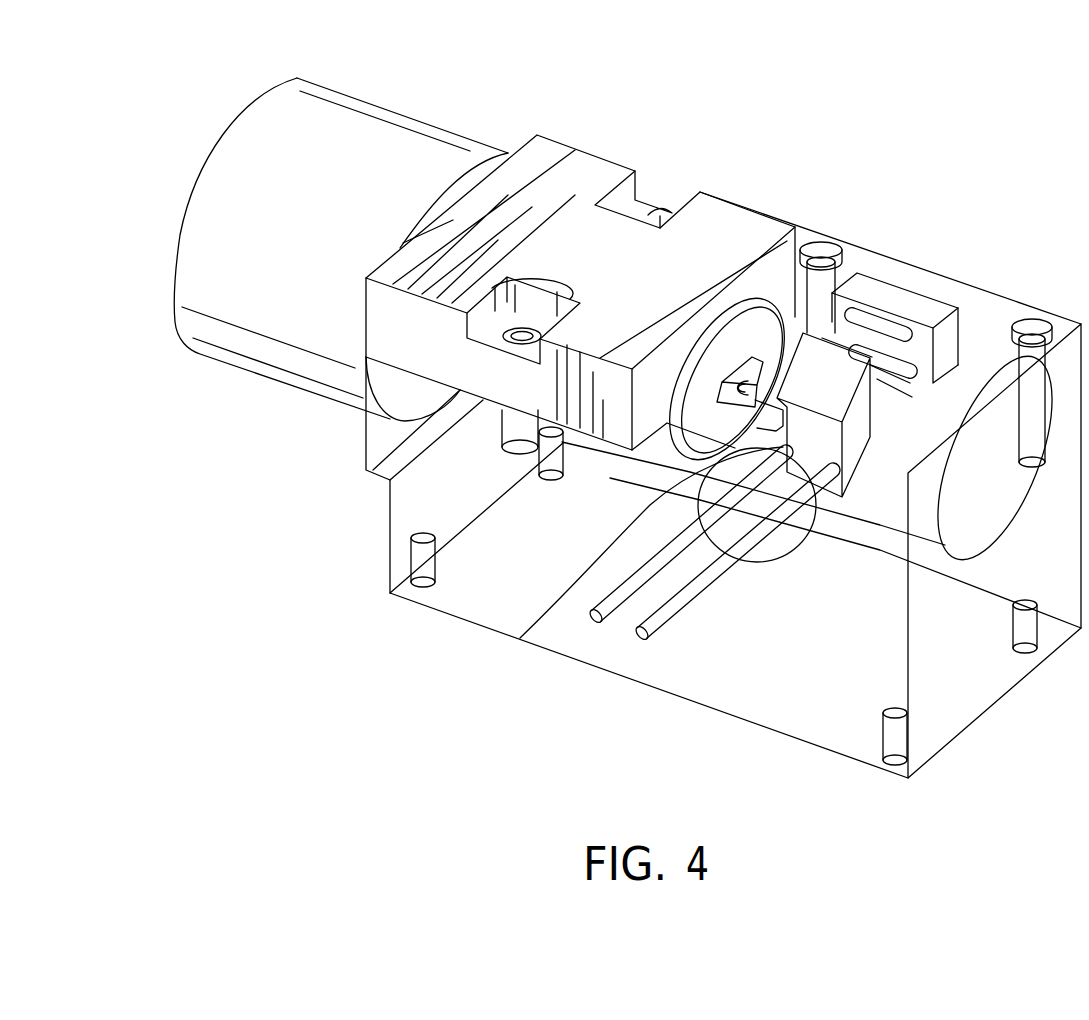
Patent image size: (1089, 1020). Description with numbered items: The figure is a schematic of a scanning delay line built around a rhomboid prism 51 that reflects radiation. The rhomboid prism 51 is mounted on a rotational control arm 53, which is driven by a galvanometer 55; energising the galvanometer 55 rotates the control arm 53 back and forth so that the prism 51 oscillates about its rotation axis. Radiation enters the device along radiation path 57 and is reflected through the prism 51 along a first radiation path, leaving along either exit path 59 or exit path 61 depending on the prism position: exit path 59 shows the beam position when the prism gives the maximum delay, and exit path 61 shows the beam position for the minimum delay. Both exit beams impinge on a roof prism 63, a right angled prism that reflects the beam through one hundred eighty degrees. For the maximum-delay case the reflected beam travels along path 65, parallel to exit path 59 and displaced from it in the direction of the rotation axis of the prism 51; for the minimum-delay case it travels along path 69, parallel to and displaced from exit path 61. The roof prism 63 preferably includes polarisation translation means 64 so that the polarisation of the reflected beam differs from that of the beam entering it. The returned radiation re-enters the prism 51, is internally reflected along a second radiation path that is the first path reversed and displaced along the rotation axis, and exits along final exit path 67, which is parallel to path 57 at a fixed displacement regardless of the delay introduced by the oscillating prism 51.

The rhomboid prism 51 is at (522, 638).
The rotational control arm 53 is at (772, 315).
The galvanometer 55 is at (410, 118).
The radiation path 57 is at (638, 632).
The exit path 59 is at (930, 335).
The exit path 61 is at (933, 358).
The roof prism 63 is at (908, 292).
The polarisation translation means 64 is at (918, 330).
The path 65 is at (834, 293).
The radiation path 67 is at (593, 614).
The path 69 is at (870, 312).